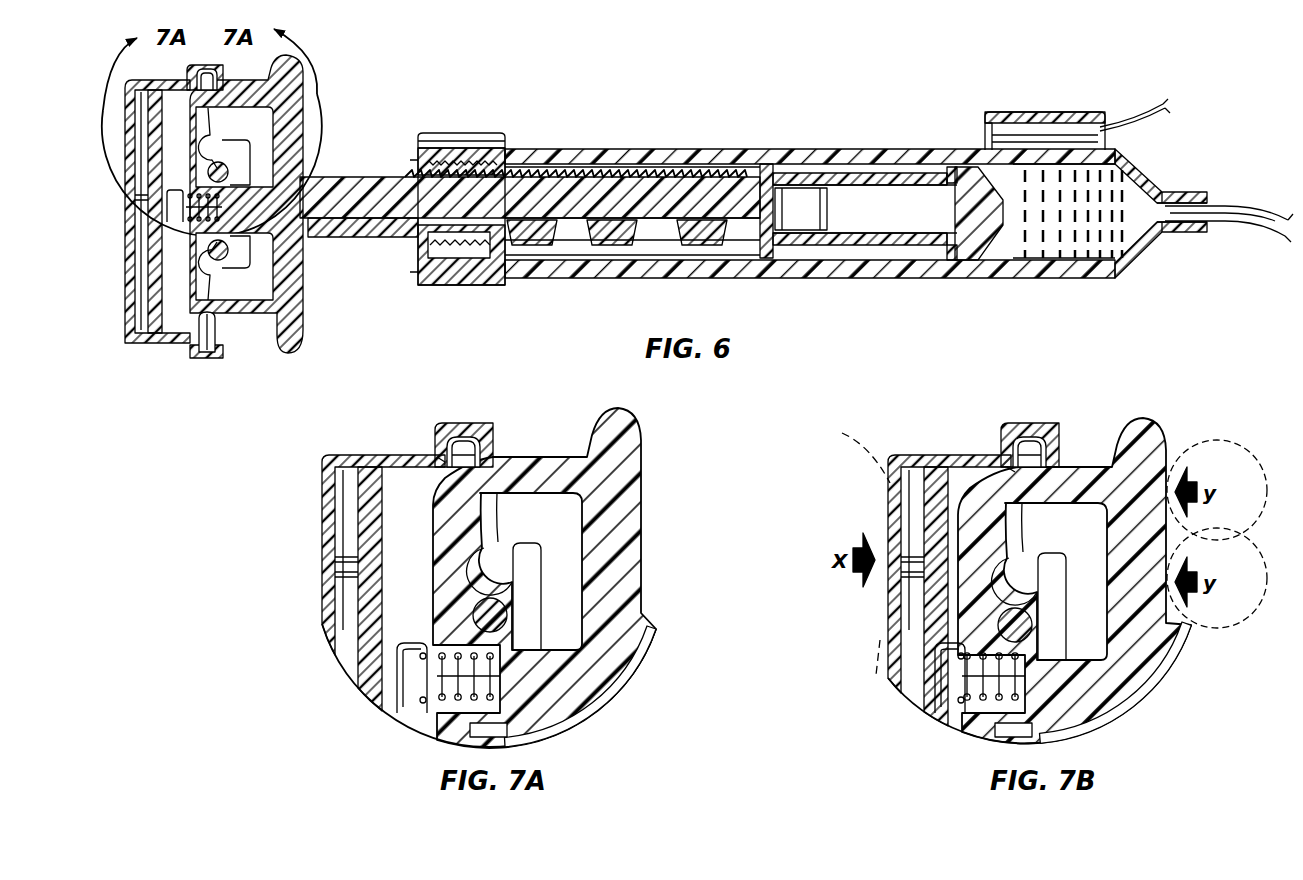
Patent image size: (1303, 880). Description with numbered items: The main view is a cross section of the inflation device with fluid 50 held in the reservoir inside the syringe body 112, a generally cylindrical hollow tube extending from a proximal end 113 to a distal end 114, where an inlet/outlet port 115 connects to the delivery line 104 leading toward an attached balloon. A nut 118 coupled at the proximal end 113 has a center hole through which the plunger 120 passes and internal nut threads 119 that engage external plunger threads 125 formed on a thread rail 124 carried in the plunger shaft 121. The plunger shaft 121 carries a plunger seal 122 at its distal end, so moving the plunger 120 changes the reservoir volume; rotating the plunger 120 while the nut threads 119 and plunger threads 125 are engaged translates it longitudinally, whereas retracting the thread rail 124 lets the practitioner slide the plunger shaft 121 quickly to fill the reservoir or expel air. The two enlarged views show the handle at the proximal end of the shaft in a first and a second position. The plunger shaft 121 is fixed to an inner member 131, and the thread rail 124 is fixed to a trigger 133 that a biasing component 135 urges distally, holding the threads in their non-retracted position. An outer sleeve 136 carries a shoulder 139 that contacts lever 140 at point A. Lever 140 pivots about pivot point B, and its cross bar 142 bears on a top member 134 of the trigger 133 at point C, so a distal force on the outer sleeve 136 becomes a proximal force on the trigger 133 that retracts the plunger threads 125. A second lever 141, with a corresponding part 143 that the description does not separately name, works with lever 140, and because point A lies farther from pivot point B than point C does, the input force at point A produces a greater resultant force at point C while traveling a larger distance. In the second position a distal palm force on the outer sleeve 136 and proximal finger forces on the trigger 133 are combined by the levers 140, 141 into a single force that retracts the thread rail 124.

In FIG. 6, the fluid 50 is at (1077, 217).
In FIG. 6, the delivery line 104 is at (1228, 207).
In FIG. 6, the syringe body 112 is at (830, 272).
In FIG. 6, the proximal end 113 is at (404, 156).
In FIG. 6, the distal end 114 is at (1138, 256).
In FIG. 6, the inlet/outlet port 115 is at (1160, 205).
In FIG. 6, the nut 118 is at (467, 135).
In FIG. 6, the internal nut threads 119 is at (515, 175).
In FIG. 6, the plunger 120 is at (809, 157).
In FIG. 6, the plunger shaft 121 is at (402, 228).
In FIG. 6, the plunger seal 122 is at (917, 177).
In FIG. 6, the thread rail 124 is at (648, 190).
In FIG. 6, the plunger threads 125 is at (607, 172).
In FIG. 7A, the inner member 131 is at (533, 607).
In FIG. 7B, the inner member 131 is at (1063, 637).
In FIG. 6, the trigger 133 is at (303, 308).
In FIG. 7A, the trigger 133 is at (641, 485).
In FIG. 7B, the trigger 133 is at (1167, 455).
In FIG. 7A, the top member 134 is at (412, 640).
In FIG. 7B, the top member 134 is at (963, 593).
In FIG. 6, the biasing component 135 is at (200, 343).
In FIG. 6, the outer sleeve 136 is at (128, 317).
In FIG. 7A, the outer sleeve 136 is at (320, 523).
In FIG. 7B, the outer sleeve 136 is at (890, 487).
In FIG. 7A, the shoulder 139 is at (437, 457).
In FIG. 7B, the shoulder 139 is at (1007, 455).
In FIG. 6, the lever 140 is at (207, 73).
In FIG. 7A, the lever 140 is at (477, 455).
In FIG. 7B, the lever 140 is at (1038, 460).
In FIG. 6, the lever 141 is at (218, 346).
In FIG. 6, the cross bar 142 is at (225, 152).
In FIG. 6, the lower latch 143 is at (226, 252).
In FIG. 7A, the point A is at (437, 457).
In FIG. 7B, the point A is at (1010, 465).
In FIG. 7A, the pivot point B is at (505, 560).
In FIG. 7B, the pivot point B is at (1030, 572).
In FIG. 7A, the point C is at (407, 658).
In FIG. 7B, the point C is at (933, 647).